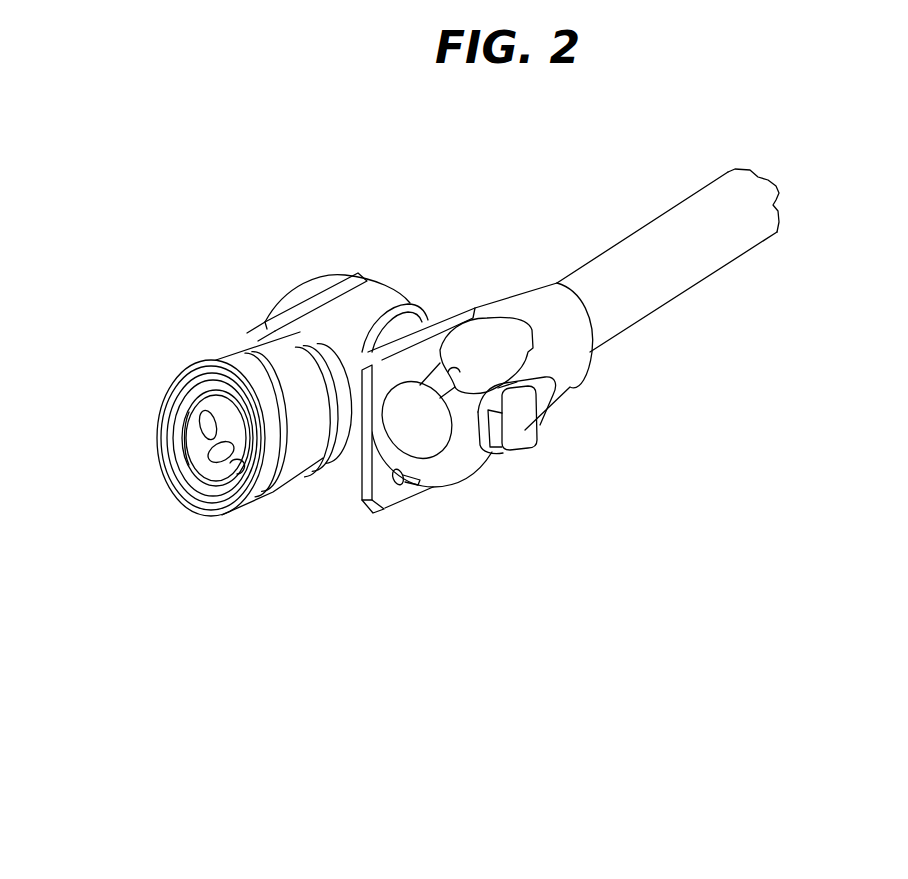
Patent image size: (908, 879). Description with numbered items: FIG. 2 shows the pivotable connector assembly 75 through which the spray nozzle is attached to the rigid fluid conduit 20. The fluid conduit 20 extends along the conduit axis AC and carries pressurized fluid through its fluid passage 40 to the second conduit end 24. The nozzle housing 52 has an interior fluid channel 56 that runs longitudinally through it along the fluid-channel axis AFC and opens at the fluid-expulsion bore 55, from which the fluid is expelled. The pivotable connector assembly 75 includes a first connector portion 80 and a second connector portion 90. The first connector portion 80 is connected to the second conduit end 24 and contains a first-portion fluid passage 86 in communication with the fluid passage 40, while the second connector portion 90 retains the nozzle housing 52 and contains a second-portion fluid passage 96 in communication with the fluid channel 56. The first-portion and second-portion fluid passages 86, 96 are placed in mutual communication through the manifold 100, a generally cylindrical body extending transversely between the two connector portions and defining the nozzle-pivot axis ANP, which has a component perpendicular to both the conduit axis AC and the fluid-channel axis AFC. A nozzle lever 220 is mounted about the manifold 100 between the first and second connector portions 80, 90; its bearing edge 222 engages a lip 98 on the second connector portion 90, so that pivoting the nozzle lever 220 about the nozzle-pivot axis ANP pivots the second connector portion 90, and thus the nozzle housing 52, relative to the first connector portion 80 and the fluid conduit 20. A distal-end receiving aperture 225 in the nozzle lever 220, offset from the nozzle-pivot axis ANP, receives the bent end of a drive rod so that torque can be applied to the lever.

The fluid conduit 20 is at (680, 203).
The second conduit end 24 is at (563, 358).
The fluid passage 40 is at (697, 255).
The nozzle housing 52 is at (193, 367).
The fluid-expulsion bore 55 is at (183, 450).
The interior fluid channel 56 is at (216, 464).
The pivotable connector assembly 75 is at (452, 325).
The first connector portion 80 is at (470, 467).
The first-portion fluid passage 86 is at (535, 361).
The second connector portion 90 is at (307, 293).
The second-portion fluid passage 96 is at (306, 349).
The lip 98 is at (333, 460).
The manifold 100 is at (517, 435).
The nozzle lever 220 is at (383, 500).
The bearing edge 222 is at (352, 462).
The distal-end receiving aperture 225 is at (420, 483).
The conduit axis AC is at (287, 507).
The fluid-channel axis AFC is at (130, 493).
The nozzle-pivot axis ANP is at (137, 323).